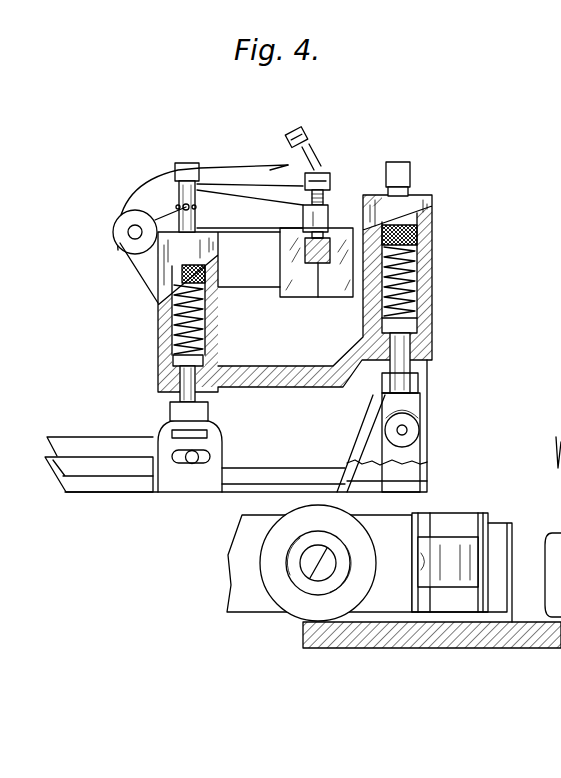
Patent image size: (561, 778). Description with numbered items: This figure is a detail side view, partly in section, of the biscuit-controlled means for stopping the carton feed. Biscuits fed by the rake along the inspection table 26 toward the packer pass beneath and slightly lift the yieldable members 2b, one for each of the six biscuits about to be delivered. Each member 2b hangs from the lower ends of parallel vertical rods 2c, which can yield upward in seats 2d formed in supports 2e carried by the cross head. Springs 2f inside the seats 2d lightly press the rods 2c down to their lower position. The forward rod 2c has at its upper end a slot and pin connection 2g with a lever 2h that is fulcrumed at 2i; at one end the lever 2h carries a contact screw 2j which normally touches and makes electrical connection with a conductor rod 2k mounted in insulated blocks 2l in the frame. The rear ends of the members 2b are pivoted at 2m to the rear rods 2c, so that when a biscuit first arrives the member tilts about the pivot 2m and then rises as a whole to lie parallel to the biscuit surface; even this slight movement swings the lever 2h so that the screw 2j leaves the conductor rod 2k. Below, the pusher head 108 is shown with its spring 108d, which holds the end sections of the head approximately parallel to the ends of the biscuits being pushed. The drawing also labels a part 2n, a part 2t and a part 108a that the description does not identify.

The yieldable member 2b is at (86, 462).
The vertical rod 2c is at (186, 389).
The seat 2d is at (175, 360).
The support 2e is at (433, 270).
The spring 2f is at (206, 325).
The slot and pin connection 2g is at (190, 204).
The lever 2h is at (160, 196).
The fulcrum 2i is at (134, 230).
The contact screw 2j is at (330, 181).
The conductor rod 2k is at (318, 266).
The insulated block 2l is at (342, 300).
The pivot 2m is at (406, 431).
The slotted bracket 2n is at (194, 456).
The spring nut 2t is at (420, 255).
The inspection table 26 is at (365, 625).
The pusher head 108 is at (498, 523).
The roller 108a is at (296, 606).
The spring 108d is at (466, 545).